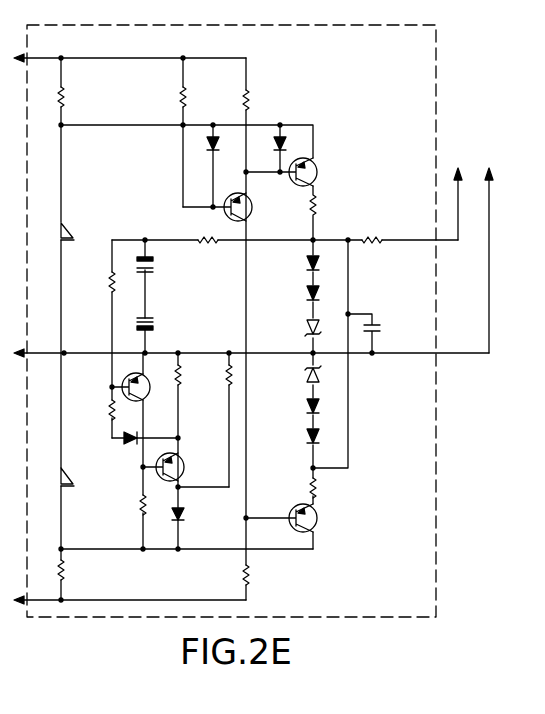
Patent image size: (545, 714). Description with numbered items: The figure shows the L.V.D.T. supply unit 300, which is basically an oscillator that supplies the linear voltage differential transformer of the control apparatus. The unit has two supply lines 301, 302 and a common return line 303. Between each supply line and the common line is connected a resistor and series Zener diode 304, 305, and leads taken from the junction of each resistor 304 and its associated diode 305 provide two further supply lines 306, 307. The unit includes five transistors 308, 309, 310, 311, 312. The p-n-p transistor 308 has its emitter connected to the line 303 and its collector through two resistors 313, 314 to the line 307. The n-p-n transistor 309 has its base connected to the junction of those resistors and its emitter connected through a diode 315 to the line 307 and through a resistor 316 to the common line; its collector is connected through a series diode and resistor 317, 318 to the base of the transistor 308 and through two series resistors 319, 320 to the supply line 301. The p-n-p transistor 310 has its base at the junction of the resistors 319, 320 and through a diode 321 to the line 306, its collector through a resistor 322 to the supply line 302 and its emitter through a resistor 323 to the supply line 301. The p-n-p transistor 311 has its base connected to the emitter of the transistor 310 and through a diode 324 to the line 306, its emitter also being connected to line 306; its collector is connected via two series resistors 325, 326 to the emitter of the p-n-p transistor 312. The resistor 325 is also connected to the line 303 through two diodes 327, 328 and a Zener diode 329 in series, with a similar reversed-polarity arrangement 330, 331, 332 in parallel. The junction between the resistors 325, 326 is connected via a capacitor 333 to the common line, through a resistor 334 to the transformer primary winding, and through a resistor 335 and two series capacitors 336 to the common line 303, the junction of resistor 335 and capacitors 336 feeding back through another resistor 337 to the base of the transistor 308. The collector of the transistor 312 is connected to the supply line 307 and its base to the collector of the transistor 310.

The L.V.D.T. supply unit 300 is at (436, 432).
The supply line 301 is at (96, 58).
The supply line 302 is at (168, 600).
The common return line 303 is at (88, 351).
The resistor 304 is at (70, 97).
The Zener diode 305 is at (73, 232).
The supply line 306 is at (97, 125).
The supply line 307 is at (132, 550).
The transistor 308 is at (150, 391).
The transistor 309 is at (181, 473).
The transistor 310 is at (253, 207).
The transistor 311 is at (313, 164).
The transistor 312 is at (318, 520).
The resistor 313 is at (146, 418).
The resistor 314 is at (141, 498).
The diode 315 is at (184, 515).
The resistor 316 is at (233, 372).
The diode 317 is at (127, 430).
The resistor 318 is at (111, 408).
The resistor 319 is at (179, 386).
The resistor 320 is at (186, 100).
The diode 321 is at (207, 143).
The resistor 322 is at (250, 578).
The resistor 323 is at (250, 100).
The diode 324 is at (287, 142).
The resistor 325 is at (318, 200).
The resistor 326 is at (318, 487).
The diode 327 is at (309, 262).
The diode 328 is at (309, 295).
The Zener diode 329 is at (309, 330).
The diode 330 is at (311, 436).
The diode 331 is at (311, 410).
The Zener diode 332 is at (311, 378).
The capacitor 333 is at (381, 327).
The resistor 334 is at (372, 237).
The resistor 335 is at (201, 243).
The capacitors 336 is at (148, 264).
The resistor 337 is at (109, 283).